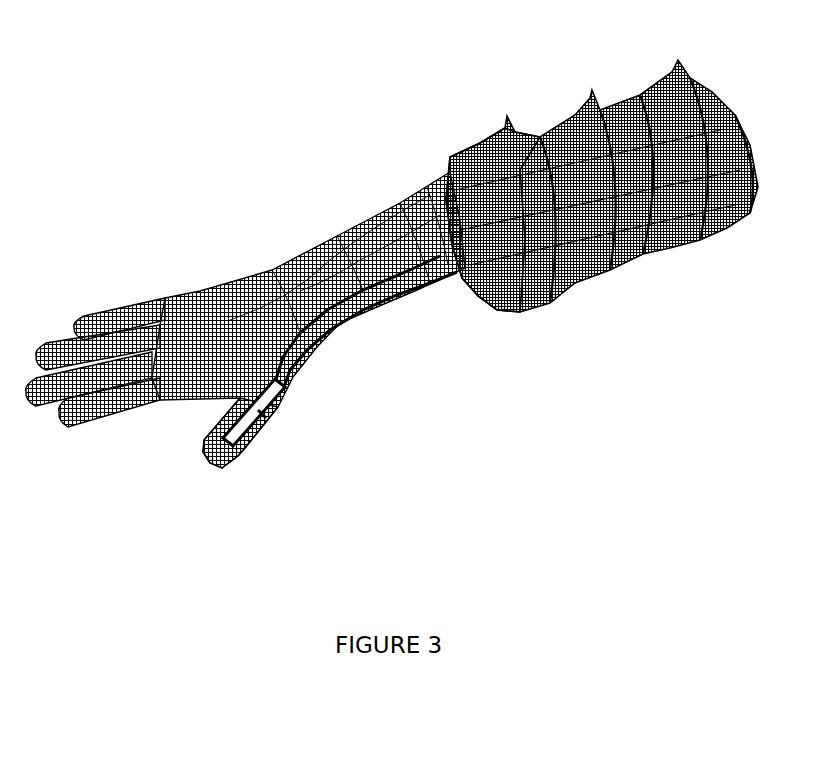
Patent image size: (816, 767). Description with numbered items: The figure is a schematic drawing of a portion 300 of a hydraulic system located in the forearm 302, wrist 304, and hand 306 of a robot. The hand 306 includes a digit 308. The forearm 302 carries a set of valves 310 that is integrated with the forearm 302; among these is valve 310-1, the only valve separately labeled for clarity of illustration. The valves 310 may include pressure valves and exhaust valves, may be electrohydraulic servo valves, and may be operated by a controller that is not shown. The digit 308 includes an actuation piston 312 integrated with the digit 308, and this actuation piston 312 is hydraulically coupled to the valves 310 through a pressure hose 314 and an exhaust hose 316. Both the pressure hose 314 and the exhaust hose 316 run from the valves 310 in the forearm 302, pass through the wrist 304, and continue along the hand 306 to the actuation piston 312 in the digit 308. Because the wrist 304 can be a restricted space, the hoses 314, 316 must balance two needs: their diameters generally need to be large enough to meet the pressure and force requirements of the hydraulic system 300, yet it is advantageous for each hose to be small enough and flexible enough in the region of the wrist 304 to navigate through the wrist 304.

The portion of a hydraulic system 300 is at (78, 53).
The forearm 302 is at (308, 192).
The wrist 304 is at (301, 228).
The hand 306 is at (30, 276).
The digit 308 is at (245, 452).
The set of valves 310 is at (490, 337).
The valve 310-1 is at (440, 182).
The actuation piston 312 is at (272, 413).
The pressure hose 314 is at (378, 300).
The exhaust hose 316 is at (418, 270).